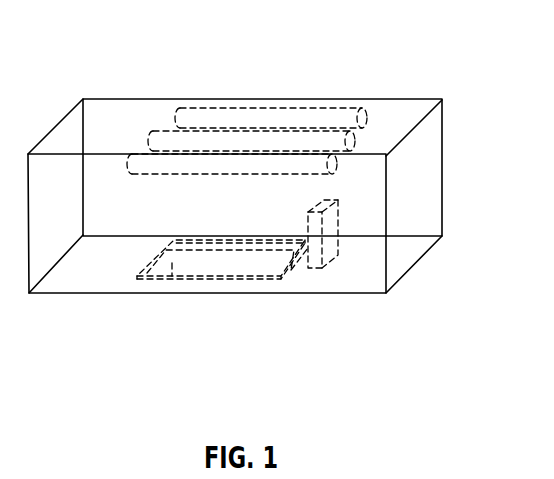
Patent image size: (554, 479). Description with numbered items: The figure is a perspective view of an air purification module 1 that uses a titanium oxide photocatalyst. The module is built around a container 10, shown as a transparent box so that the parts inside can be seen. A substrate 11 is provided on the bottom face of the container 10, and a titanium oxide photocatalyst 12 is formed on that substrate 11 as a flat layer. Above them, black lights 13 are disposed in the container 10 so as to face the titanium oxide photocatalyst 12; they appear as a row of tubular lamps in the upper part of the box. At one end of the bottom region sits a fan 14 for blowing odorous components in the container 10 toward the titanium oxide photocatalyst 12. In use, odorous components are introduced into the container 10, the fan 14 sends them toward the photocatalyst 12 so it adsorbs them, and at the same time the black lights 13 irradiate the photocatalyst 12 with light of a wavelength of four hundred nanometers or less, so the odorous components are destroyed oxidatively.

The air purification module 1 is at (422, 78).
The container 10 is at (443, 166).
The substrate 11 is at (235, 278).
The titanium oxide photocatalyst 12 is at (170, 292).
The black lights 13 is at (301, 105).
The fan 14 is at (336, 268).